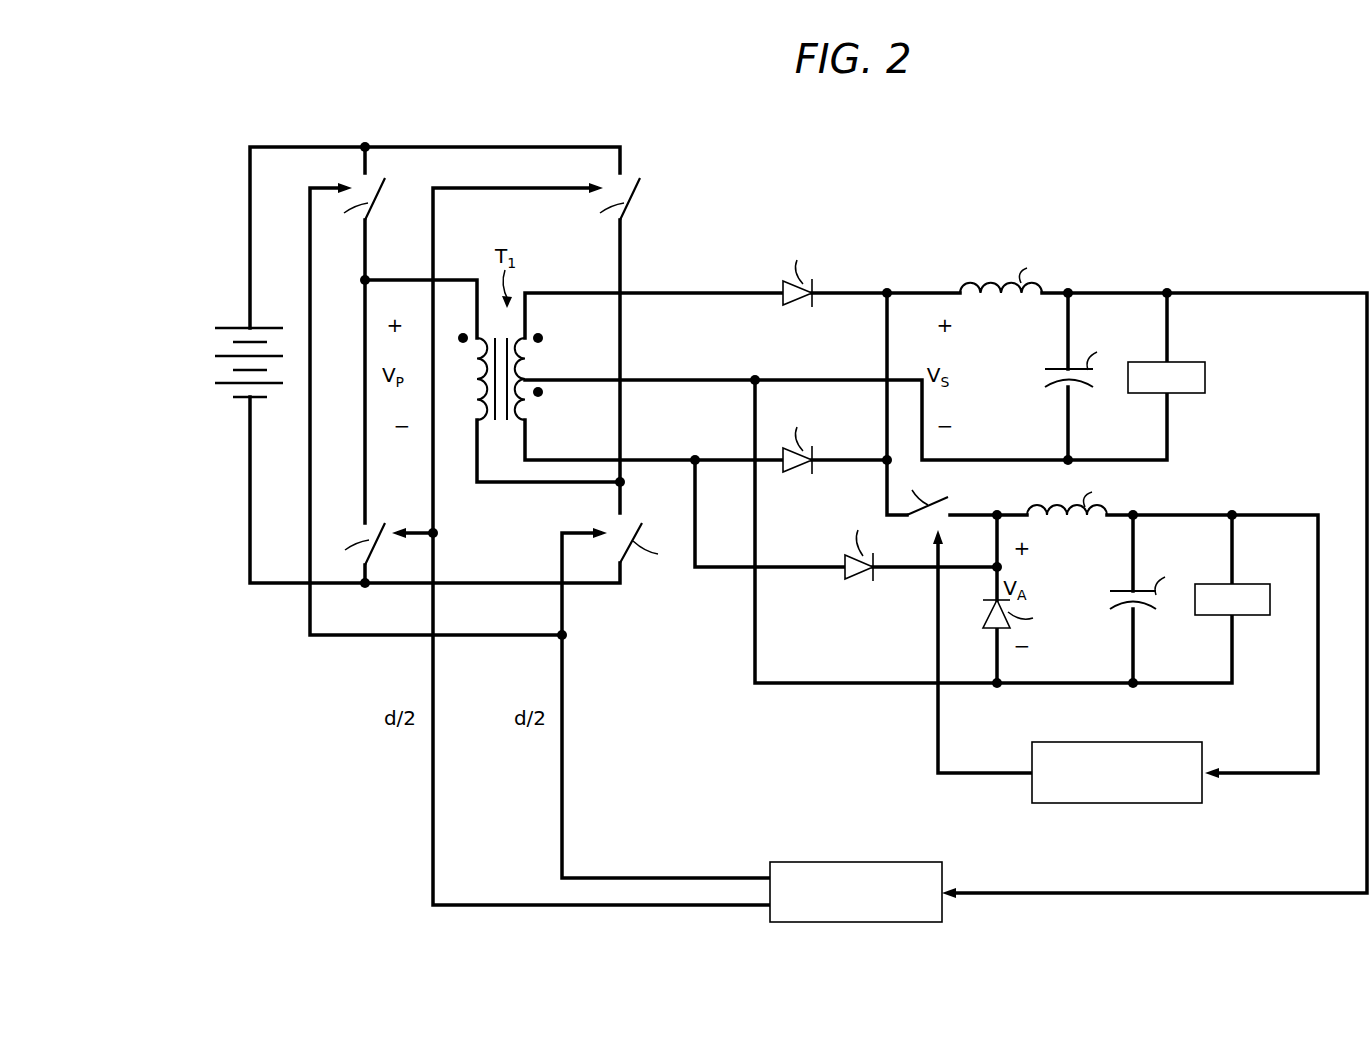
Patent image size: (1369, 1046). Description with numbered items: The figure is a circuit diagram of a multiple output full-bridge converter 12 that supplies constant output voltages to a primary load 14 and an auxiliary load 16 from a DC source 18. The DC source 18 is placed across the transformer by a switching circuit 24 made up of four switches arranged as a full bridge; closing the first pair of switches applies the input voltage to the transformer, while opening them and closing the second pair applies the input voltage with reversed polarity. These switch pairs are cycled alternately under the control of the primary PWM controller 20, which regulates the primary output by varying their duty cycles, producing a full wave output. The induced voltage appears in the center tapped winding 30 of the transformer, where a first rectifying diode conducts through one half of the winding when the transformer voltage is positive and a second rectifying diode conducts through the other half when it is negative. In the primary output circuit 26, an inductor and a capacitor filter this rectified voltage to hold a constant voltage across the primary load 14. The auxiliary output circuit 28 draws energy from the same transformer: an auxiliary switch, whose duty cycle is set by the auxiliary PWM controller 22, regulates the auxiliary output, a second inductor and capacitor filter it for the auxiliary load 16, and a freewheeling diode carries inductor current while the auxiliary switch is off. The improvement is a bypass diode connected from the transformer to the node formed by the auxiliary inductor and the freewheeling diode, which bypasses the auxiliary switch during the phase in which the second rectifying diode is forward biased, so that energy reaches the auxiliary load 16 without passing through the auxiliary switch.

The converter 12 is at (1030, 198).
The primary load 14 is at (1207, 378).
The auxiliary load 16 is at (1258, 583).
The DC source 18 is at (236, 398).
The primary PWM controller 20 is at (860, 861).
The auxiliary PWM controller 22 is at (1120, 741).
The switching circuit 24 is at (517, 114).
The primary output circuit 26 is at (1145, 250).
The auxiliary output circuit 28 is at (1235, 471).
The center tapped winding 30 is at (551, 361).